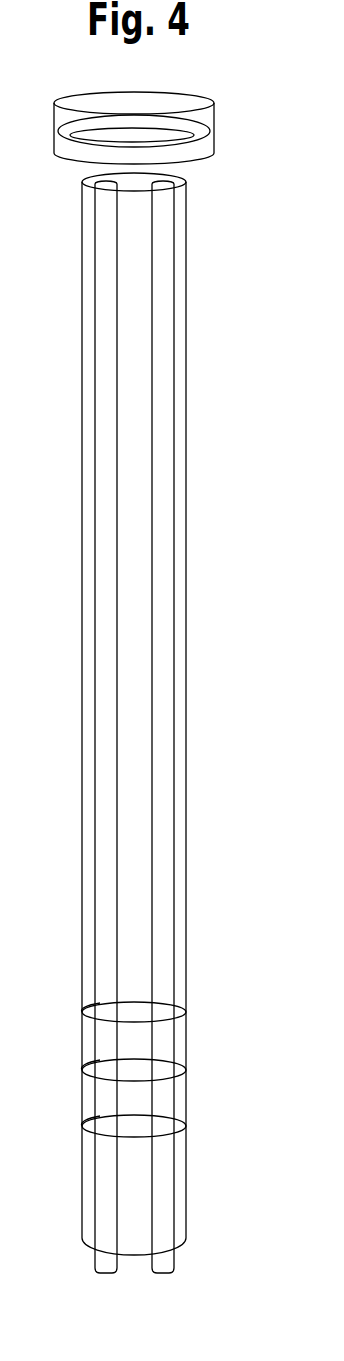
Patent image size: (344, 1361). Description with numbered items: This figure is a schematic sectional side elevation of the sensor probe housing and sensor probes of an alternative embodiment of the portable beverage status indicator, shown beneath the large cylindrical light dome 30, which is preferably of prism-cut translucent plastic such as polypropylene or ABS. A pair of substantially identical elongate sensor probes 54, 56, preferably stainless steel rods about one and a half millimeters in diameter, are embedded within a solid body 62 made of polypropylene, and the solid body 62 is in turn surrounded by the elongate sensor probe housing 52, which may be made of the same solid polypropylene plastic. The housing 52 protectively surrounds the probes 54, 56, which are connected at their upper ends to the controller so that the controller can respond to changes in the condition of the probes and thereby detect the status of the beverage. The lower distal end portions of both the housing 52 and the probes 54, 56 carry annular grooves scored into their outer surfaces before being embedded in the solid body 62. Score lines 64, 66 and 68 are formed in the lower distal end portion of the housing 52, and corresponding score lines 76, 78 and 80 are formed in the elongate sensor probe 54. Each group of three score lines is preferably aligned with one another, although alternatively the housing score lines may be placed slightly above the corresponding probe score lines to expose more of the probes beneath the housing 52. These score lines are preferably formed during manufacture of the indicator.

The light dome 30 is at (178, 96).
The elongate sensor probe housing 52 is at (158, 714).
The solid body 62 is at (137, 565).
The elongate sensor probe 54 is at (108, 1275).
The elongate sensor probe 56 is at (165, 1273).
The score line 64 is at (178, 1136).
The score line 66 is at (178, 1079).
The score line 68 is at (186, 1023).
The score line 76 is at (102, 1123).
The score line 78 is at (102, 1063).
The score line 80 is at (92, 1006).